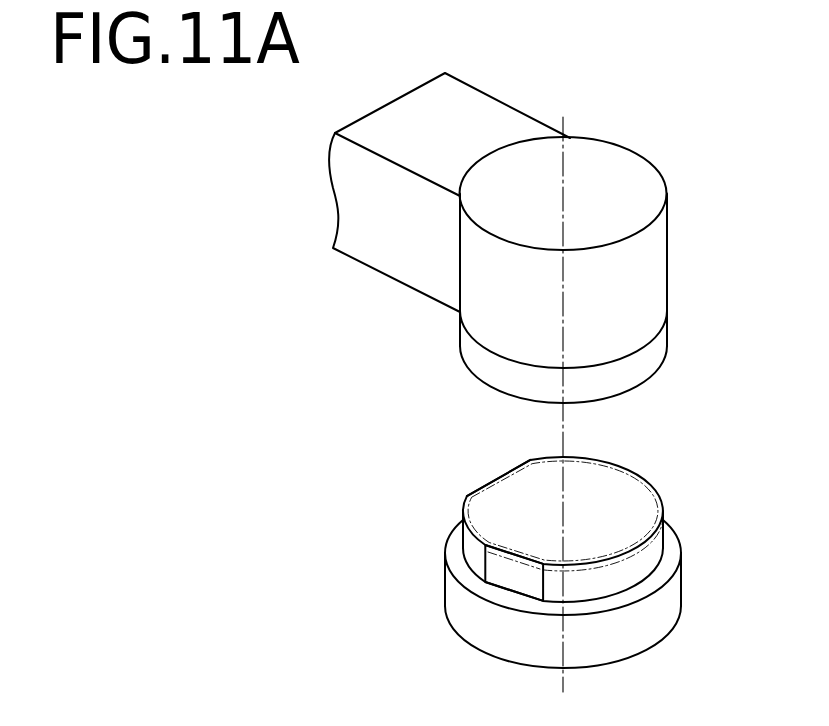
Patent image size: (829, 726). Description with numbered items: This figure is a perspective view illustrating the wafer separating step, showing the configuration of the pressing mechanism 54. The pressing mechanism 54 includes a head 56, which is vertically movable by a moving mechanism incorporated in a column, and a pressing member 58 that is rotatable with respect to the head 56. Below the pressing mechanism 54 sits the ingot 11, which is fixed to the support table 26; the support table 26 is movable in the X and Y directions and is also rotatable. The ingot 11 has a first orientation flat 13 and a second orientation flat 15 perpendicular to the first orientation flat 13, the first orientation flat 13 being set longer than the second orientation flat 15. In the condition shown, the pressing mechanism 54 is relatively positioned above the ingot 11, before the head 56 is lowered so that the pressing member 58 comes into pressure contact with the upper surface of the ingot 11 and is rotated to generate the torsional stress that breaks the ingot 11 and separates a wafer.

The pressing mechanism 54 is at (617, 133).
The head 56 is at (661, 258).
The pressing member 58 is at (661, 350).
The ingot 11 is at (571, 528).
The first orientation flat 13 is at (500, 482).
The second orientation flat 15 is at (497, 573).
The support table 26 is at (653, 633).